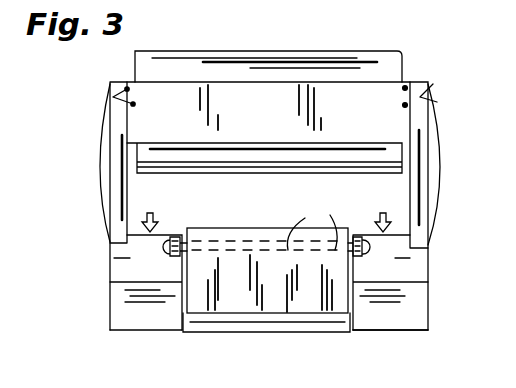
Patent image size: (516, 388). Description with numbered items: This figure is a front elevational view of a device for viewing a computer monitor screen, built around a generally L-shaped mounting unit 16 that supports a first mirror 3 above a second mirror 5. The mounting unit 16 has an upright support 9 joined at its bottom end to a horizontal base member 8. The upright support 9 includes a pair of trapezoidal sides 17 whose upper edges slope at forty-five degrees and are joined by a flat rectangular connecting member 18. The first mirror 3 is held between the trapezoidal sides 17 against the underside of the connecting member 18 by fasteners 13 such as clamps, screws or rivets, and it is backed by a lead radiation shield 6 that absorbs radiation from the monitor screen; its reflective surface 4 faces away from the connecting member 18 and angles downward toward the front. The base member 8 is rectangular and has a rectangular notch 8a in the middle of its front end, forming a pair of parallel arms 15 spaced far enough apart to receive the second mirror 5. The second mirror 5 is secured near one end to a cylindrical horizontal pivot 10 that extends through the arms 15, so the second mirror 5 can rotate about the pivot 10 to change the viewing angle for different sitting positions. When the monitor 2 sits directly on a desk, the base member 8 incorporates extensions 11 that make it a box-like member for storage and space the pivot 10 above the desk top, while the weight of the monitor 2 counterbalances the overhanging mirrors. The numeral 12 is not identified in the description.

The monitor 2 is at (266, 213).
The first mirror 3 is at (197, 173).
The reflective surface 4 is at (232, 237).
The second mirror 5 is at (267, 270).
The lead radiation shield 6 is at (300, 168).
The horizontal base member 8 is at (130, 260).
The rectangular notch 8a is at (183, 333).
The upright support 9 is at (270, 126).
The cylindrical horizontal pivot 10 is at (312, 226).
The extensions 11 is at (155, 326).
The pivot pin 12 is at (167, 256).
The fasteners 13 is at (109, 100).
The parallel arms 15 is at (110, 312).
The mounting unit 16 is at (383, 331).
The trapezoidal sides 17 is at (110, 90).
The flat rectangular connecting member 18 is at (337, 85).